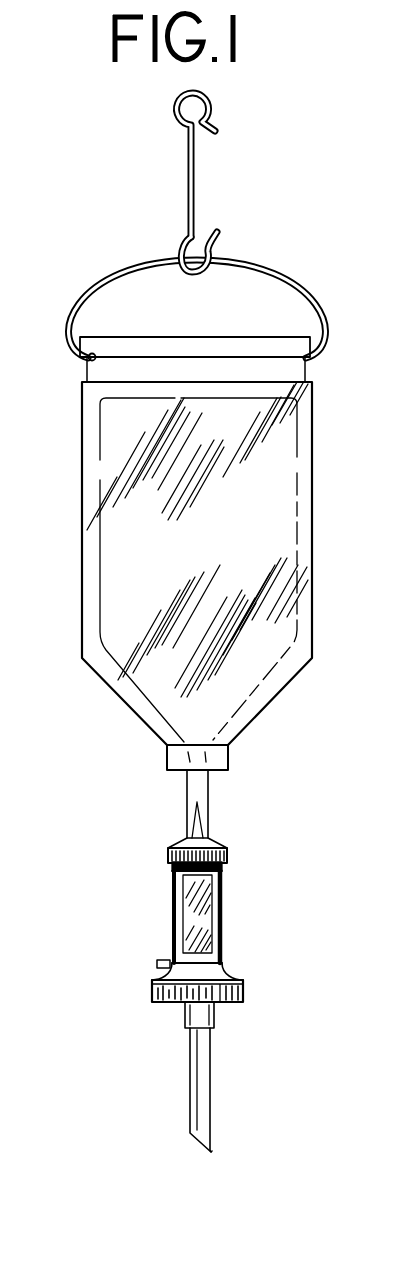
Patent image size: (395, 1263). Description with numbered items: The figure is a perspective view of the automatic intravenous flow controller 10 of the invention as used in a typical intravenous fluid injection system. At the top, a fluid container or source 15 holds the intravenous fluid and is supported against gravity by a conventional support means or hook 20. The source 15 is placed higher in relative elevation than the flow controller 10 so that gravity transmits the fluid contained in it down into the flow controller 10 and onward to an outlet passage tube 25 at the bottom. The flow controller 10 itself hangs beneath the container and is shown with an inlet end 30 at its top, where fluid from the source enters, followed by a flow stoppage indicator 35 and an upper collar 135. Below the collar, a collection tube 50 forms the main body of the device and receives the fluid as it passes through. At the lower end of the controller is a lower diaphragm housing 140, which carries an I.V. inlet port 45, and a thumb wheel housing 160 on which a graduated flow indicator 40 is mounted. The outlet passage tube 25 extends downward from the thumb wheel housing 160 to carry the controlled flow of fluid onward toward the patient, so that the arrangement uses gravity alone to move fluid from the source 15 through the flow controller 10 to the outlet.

The flow controller 10 is at (199, 961).
The fluid container 15 is at (153, 566).
The hook 20 is at (194, 198).
The outlet passage tube 25 is at (211, 1121).
The inlet end 30 is at (200, 821).
The flow stoppage indicator 35 is at (228, 852).
The graduated flow indicator 40 is at (158, 1002).
The I.V. inlet port 45 is at (158, 968).
The collection tube 50 is at (192, 930).
The upper collar 135 is at (222, 869).
The lower diaphragm housing 140 is at (224, 965).
The thumb wheel housing 160 is at (214, 1013).